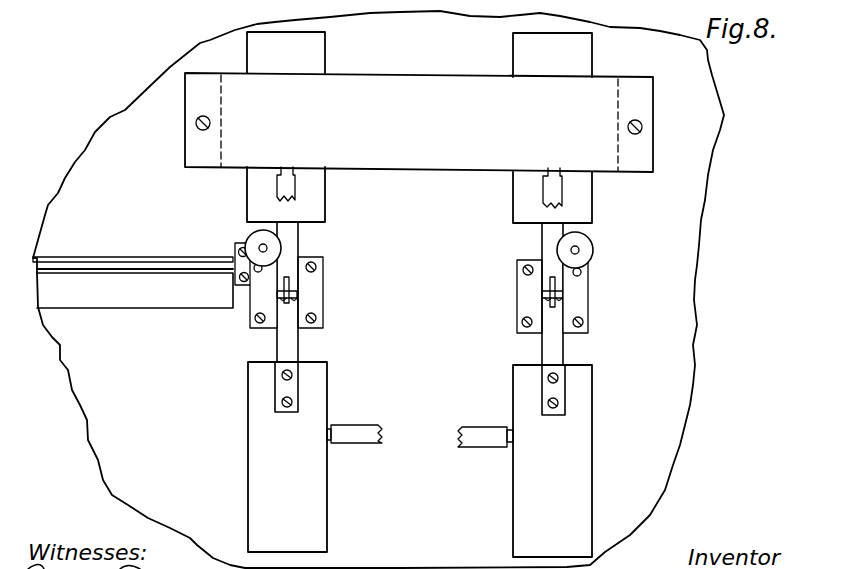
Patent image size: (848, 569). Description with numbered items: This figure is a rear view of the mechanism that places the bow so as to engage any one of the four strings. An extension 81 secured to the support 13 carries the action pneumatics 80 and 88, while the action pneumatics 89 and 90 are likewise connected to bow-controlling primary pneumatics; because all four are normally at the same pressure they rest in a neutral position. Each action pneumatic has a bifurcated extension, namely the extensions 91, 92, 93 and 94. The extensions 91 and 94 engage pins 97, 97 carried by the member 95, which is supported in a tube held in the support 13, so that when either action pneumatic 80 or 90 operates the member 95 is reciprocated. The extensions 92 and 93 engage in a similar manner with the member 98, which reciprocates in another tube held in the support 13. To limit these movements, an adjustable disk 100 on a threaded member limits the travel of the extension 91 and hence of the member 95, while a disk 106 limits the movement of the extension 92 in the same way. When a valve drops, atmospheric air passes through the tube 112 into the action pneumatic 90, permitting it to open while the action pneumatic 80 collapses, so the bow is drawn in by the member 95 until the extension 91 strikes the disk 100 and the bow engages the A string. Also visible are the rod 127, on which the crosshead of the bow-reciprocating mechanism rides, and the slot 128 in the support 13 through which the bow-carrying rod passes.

The support 13 is at (685, 268).
The action pneumatic 80 is at (318, 56).
The extension 81 is at (416, 74).
The action pneumatic 88 is at (521, 57).
The action pneumatic 89 is at (585, 426).
The action pneumatic 90 is at (317, 498).
The bifurcated extension 91 is at (299, 244).
The bifurcated extension 92 is at (551, 240).
The bifurcated extension 93 is at (565, 347).
The bifurcated extension 94 is at (290, 347).
The member 95 is at (289, 290).
The pins 97 is at (297, 295).
The member 98 is at (555, 292).
The disk 100 is at (256, 240).
The disk 106 is at (588, 246).
The tube 112 is at (357, 430).
The rod 127 is at (153, 262).
The slot 128 is at (137, 310).